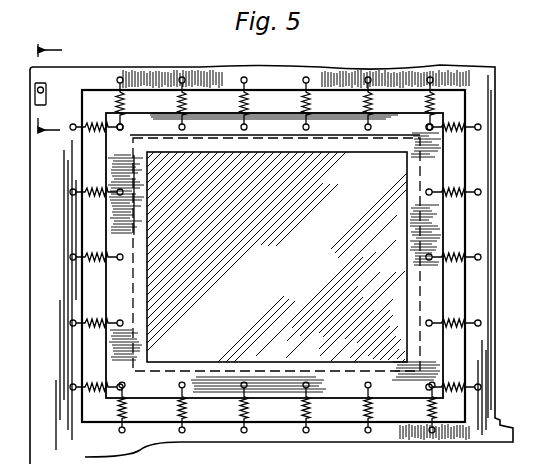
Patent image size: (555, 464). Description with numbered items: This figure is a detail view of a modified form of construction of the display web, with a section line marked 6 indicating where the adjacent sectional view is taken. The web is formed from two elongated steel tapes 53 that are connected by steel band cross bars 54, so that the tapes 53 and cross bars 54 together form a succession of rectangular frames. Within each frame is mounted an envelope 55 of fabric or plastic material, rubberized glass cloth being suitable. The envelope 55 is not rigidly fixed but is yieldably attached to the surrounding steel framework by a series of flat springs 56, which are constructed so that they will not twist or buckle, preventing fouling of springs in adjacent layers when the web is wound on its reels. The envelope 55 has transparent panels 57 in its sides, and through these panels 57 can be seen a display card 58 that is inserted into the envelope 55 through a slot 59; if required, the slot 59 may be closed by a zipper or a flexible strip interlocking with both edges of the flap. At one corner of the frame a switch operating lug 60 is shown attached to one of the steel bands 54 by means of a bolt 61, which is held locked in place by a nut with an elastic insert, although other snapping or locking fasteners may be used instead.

The section line 6- 6 is at (49, 90).
The steel tape 53 is at (484, 225).
The steel band cross bar 54 is at (257, 450).
The envelope 55 is at (135, 122).
The flat spring 56 is at (238, 104).
The transparent panel 57 is at (398, 293).
The display card 58 is at (408, 350).
The slot 59 is at (392, 142).
The switch operating lug 60 is at (46, 101).
The bolt 61 is at (45, 91).